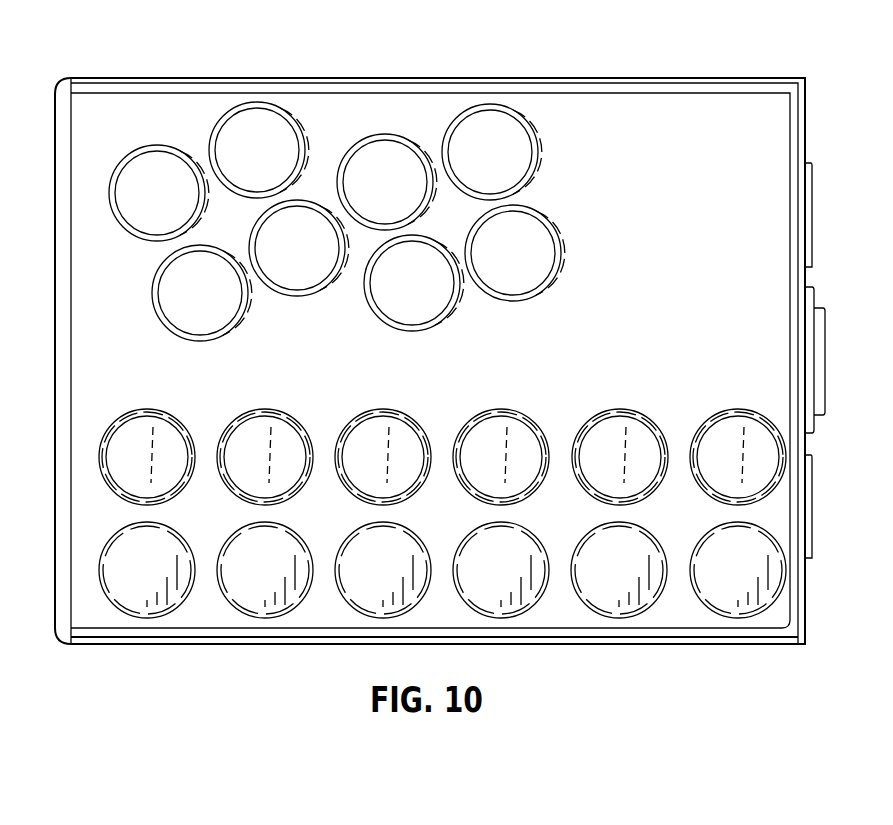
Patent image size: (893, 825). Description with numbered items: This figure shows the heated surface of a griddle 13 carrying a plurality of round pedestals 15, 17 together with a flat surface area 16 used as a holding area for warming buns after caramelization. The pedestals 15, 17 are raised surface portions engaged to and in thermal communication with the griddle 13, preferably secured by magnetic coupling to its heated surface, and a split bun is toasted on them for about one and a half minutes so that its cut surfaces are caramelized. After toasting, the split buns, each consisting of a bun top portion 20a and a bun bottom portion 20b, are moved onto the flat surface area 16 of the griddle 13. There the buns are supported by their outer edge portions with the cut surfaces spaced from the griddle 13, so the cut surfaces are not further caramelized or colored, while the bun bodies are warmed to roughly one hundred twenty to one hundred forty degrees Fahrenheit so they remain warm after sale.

The griddle 13 is at (692, 126).
The flat surface area 16 is at (615, 118).
The bun top portion 20a is at (284, 108).
The bun bottom portion 20b is at (313, 293).
The pedestal 15 is at (632, 410).
The pedestal 17 is at (627, 617).